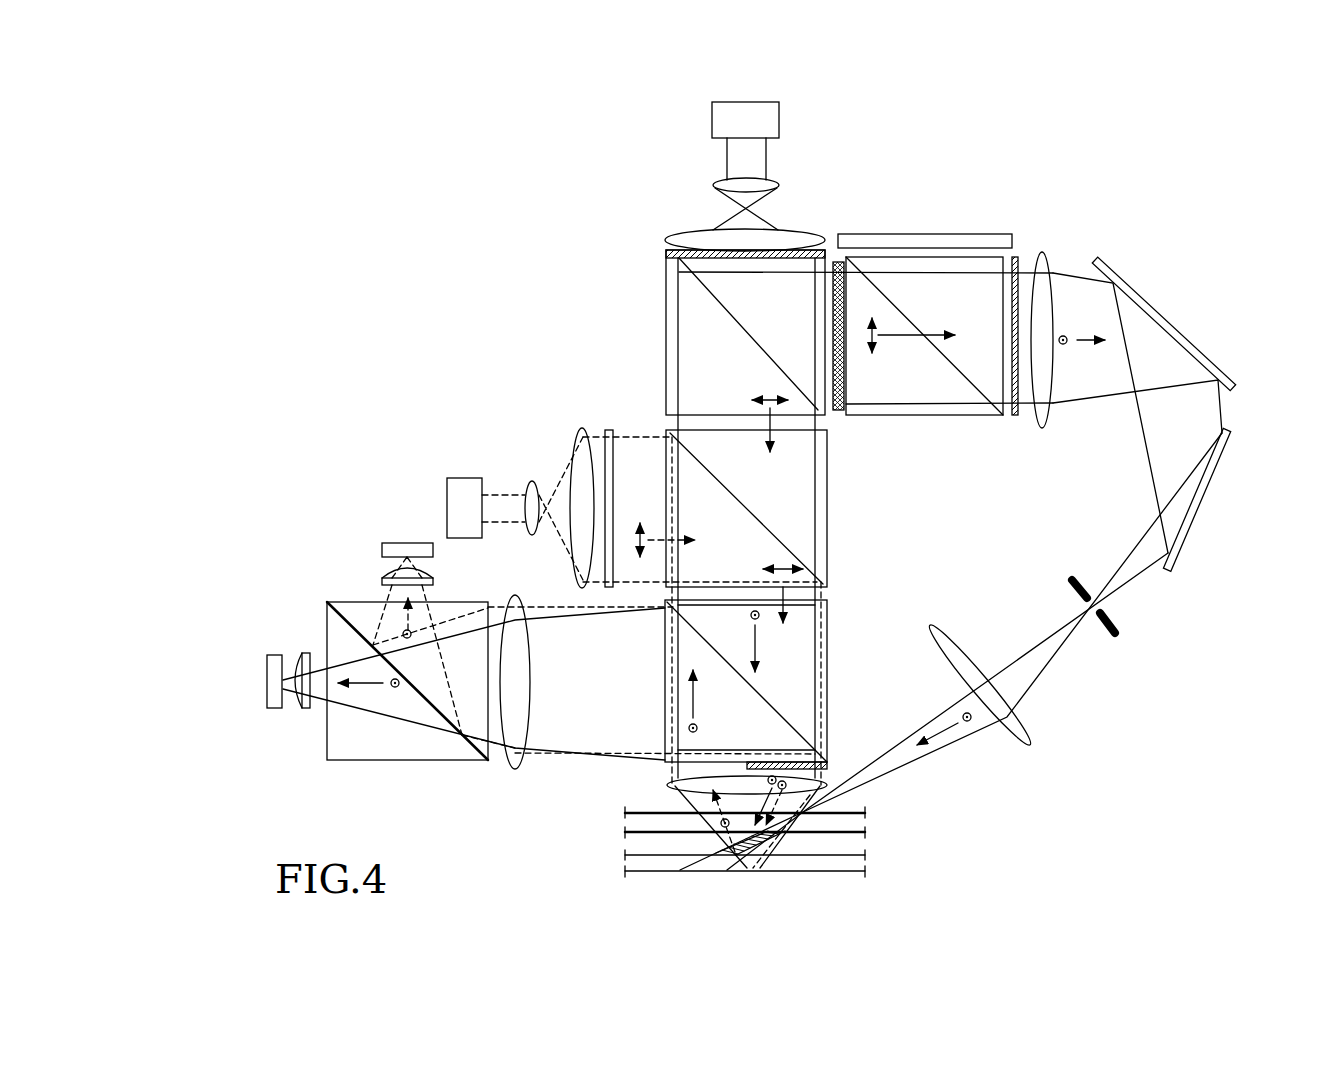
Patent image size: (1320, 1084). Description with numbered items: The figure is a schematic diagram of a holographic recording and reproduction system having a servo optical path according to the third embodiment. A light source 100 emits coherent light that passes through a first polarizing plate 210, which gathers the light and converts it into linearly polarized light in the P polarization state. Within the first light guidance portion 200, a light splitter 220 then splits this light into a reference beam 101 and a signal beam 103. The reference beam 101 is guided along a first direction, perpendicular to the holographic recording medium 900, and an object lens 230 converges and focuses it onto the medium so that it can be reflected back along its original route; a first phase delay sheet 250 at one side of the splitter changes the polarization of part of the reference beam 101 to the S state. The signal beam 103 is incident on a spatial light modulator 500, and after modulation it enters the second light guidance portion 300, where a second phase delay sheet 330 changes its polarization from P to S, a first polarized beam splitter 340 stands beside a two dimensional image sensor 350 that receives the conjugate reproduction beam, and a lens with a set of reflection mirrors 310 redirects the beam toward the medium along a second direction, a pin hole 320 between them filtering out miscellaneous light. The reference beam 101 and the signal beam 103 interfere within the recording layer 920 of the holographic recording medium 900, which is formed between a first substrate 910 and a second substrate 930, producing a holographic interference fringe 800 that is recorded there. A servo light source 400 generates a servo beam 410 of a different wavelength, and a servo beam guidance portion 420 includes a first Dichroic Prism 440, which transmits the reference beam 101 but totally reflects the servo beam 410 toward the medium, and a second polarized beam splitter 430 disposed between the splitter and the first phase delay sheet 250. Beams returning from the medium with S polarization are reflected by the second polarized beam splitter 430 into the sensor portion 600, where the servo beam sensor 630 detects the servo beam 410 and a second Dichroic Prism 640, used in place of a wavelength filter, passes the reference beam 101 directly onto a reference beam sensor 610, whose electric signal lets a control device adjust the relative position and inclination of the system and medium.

The light source 100 is at (804, 148).
The reference beam 101 is at (800, 423).
The signal beam 103 is at (1028, 282).
The first light guidance portion 200 is at (648, 503).
The first polarizing plate 210 is at (667, 253).
The light splitter 220 is at (668, 327).
The object lens 230 is at (668, 783).
The first phase delay sheet 250 is at (828, 765).
The second light guidance portion 300 is at (967, 515).
The set of reflection mirrors 310 is at (1163, 286).
The pin hole 320 is at (1116, 633).
The second phase delay sheet 330 is at (1016, 418).
The first polarized beam splitter 340 is at (972, 412).
The two dimensional image sensor 350 is at (922, 236).
The servo light source 400 is at (633, 584).
The servo beam 410 is at (643, 452).
The servo beam guidance portion 420 is at (811, 508).
The second polarized beam splitter 430 is at (827, 627).
The first Dichroic Prism 440 is at (827, 541).
The spatial light modulator 500 is at (840, 262).
The sensor portion 600 is at (424, 630).
The reference beam sensor 610 is at (267, 663).
The servo beam sensor 630 is at (398, 543).
The second Dichroic Prism 640 is at (333, 738).
The holographic interference fringe 800 is at (760, 866).
The holographic recording medium 900 is at (807, 868).
The first substrate 910 is at (850, 822).
The recording layer 920 is at (855, 843).
The second substrate 930 is at (843, 866).